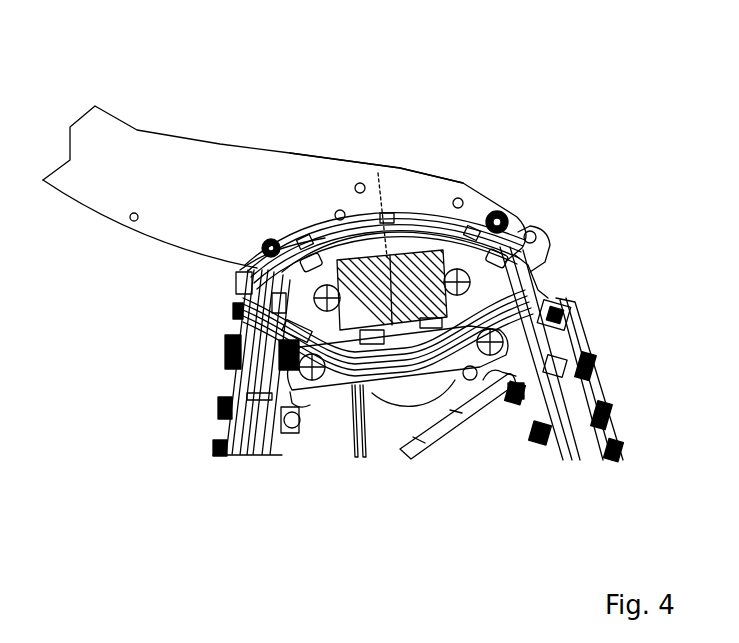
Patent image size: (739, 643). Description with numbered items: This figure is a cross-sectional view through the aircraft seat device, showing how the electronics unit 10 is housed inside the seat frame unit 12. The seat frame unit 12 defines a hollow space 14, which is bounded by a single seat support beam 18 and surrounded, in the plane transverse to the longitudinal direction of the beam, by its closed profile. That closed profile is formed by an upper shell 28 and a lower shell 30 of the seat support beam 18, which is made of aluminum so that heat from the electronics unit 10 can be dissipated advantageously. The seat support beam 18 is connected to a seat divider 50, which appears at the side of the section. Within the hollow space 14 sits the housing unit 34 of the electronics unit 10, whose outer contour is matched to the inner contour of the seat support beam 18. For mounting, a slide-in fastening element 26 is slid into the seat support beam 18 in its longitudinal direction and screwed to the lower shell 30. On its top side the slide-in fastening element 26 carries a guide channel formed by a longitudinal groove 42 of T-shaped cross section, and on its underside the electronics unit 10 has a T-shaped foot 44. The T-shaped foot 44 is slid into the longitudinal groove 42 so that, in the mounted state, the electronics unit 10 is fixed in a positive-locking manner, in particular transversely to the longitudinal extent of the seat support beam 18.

The electronics unit 10 is at (470, 235).
The seat frame unit 12 is at (431, 165).
The hollow space 14 is at (423, 248).
The seat support beam 18 is at (500, 205).
The slide-in fastening element 26 is at (413, 400).
The upper shell 28 is at (345, 262).
The lower shell 30 is at (332, 398).
The housing unit 34 is at (328, 240).
The longitudinal groove 42 is at (380, 395).
The T-shaped foot 44 is at (444, 388).
The seat divider 50 is at (152, 122).